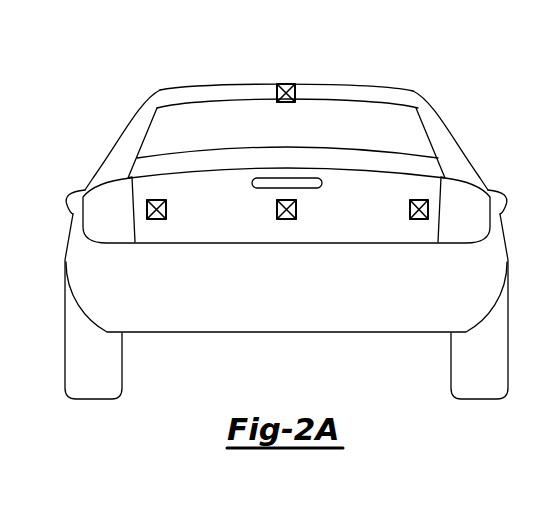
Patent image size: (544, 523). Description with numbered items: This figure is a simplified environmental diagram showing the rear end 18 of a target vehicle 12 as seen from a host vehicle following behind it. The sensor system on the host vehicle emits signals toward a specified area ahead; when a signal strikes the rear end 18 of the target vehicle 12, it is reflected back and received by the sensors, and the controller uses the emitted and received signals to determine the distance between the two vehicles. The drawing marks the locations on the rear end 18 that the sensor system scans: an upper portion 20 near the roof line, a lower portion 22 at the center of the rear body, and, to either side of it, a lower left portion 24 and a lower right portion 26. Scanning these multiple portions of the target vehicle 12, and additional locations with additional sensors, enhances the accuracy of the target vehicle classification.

The target vehicle 12 is at (207, 83).
The rear end 18 is at (286, 213).
The upper portion 20 is at (286, 102).
The lower portion 22 is at (286, 220).
The lower left portion 24 is at (156, 220).
The lower right portion 26 is at (418, 220).